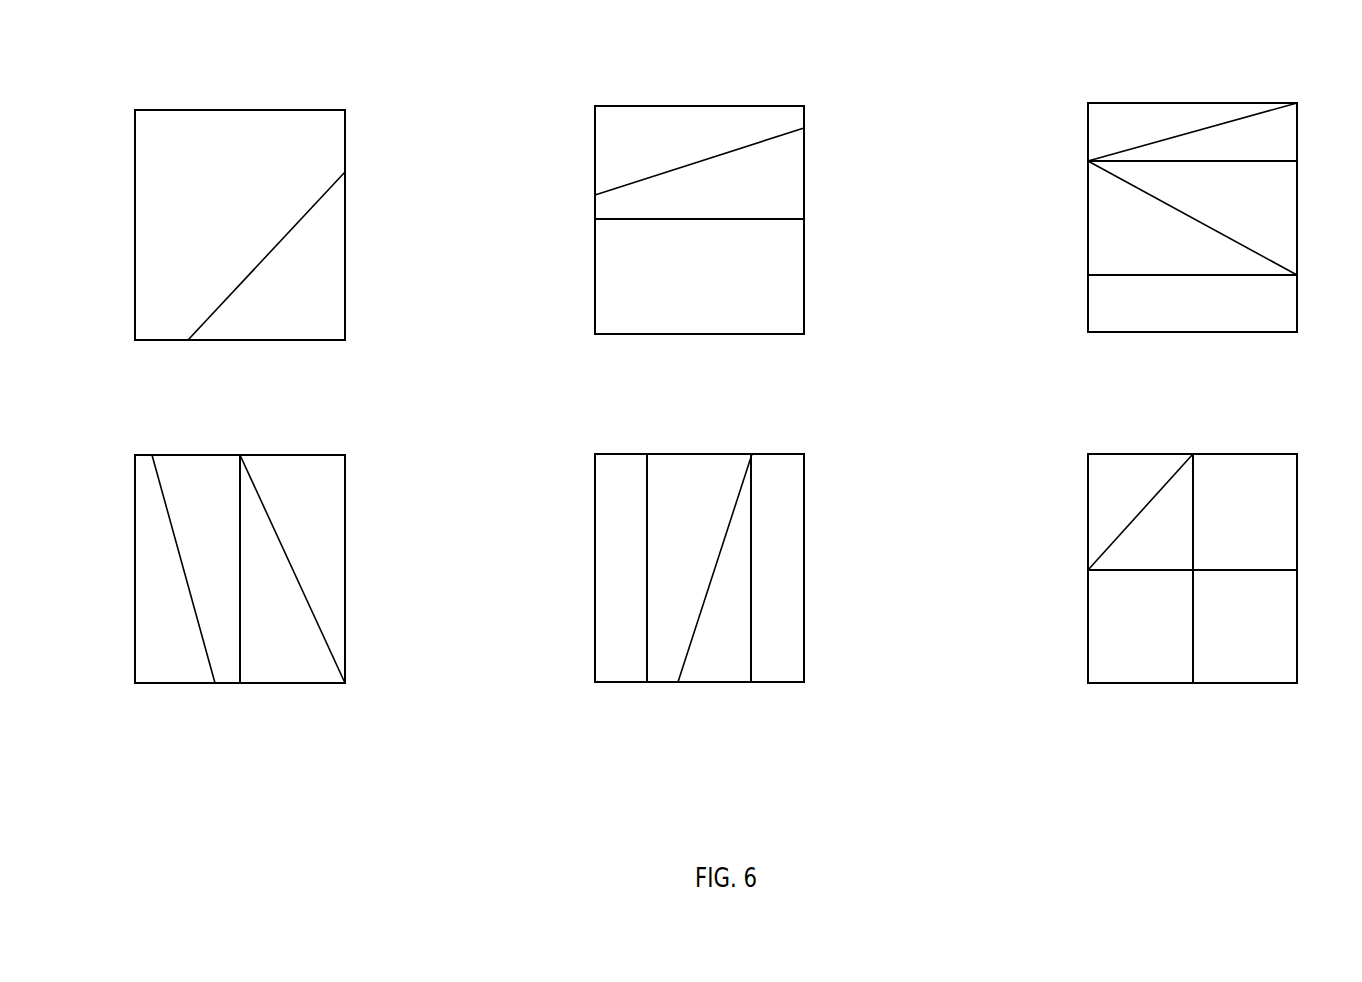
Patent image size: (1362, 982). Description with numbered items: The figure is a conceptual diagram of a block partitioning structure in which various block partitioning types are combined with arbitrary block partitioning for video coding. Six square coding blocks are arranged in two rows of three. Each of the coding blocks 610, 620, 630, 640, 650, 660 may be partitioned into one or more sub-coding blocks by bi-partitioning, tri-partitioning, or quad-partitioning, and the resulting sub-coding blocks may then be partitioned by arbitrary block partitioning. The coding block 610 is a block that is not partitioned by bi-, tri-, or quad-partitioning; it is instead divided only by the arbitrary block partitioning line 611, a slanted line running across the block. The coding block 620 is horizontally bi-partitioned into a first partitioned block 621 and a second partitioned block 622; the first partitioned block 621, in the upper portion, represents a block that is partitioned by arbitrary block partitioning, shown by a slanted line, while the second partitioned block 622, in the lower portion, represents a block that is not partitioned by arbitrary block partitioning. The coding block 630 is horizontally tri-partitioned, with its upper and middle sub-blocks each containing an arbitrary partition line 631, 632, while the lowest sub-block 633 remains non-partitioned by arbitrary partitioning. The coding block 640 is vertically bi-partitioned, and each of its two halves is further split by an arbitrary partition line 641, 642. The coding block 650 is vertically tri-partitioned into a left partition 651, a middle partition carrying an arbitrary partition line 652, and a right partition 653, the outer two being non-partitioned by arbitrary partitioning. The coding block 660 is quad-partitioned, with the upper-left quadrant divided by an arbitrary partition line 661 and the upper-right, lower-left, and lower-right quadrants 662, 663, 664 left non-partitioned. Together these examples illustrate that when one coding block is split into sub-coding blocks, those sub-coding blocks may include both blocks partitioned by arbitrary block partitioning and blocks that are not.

The coding block 610 is at (135, 110).
The diagonal split line 611 is at (240, 110).
The coding block 620 is at (595, 106).
The first partitioned block 621 is at (804, 160).
The second partitioned block 622 is at (804, 275).
The coding block 630 is at (1088, 103).
The upper diagonal split line 631 is at (1297, 131).
The lower diagonal split line 632 is at (1297, 212).
The bottom horizontal partition 633 is at (1297, 296).
The coding block 640 is at (135, 455).
The left diagonal split line 641 is at (185, 455).
The right diagonal split line 642 is at (286, 455).
The coding block 650 is at (595, 454).
The left vertical partition 651 is at (622, 682).
The diagonal split line 652 is at (697, 454).
The right vertical partition 653 is at (778, 682).
The coding block 660 is at (1088, 454).
The diagonal split line 661 is at (1138, 454).
The top-right partition 662 is at (1240, 454).
The bottom-left partition 663 is at (1148, 683).
The bottom-right partition 664 is at (1250, 683).